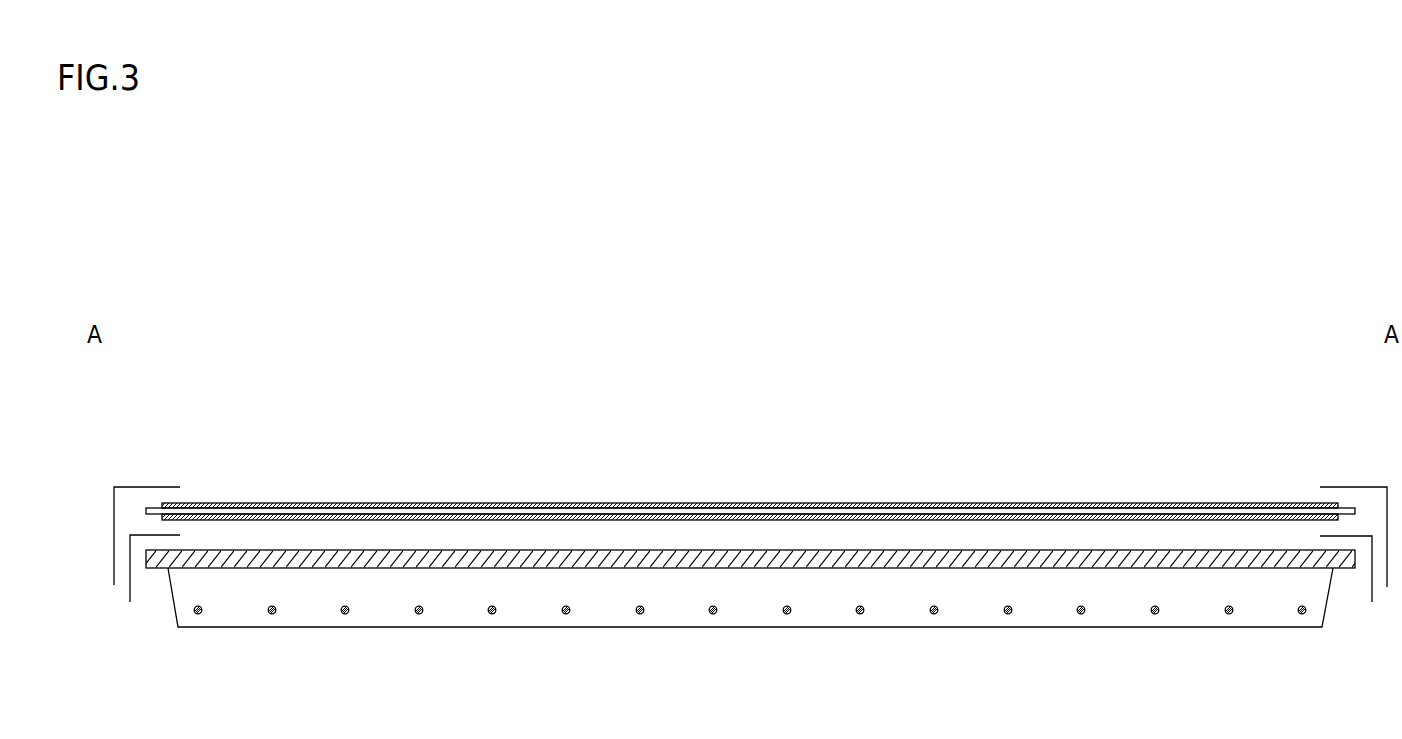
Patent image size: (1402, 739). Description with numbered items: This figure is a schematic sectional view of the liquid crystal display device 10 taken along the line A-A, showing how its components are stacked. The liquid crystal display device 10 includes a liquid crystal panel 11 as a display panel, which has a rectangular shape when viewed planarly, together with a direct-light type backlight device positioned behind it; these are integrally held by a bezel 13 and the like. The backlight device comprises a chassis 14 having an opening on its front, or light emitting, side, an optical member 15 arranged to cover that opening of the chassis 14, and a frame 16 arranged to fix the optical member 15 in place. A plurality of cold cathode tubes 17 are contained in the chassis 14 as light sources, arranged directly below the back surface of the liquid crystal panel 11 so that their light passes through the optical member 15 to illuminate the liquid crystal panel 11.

The liquid crystal display device 10 is at (496, 452).
The liquid crystal panel 11 is at (387, 502).
The bezel 13 is at (154, 487).
The chassis 14 is at (173, 610).
The optical member 15 is at (705, 558).
The frame 16 is at (138, 535).
The cold cathode tubes 17 is at (347, 607).